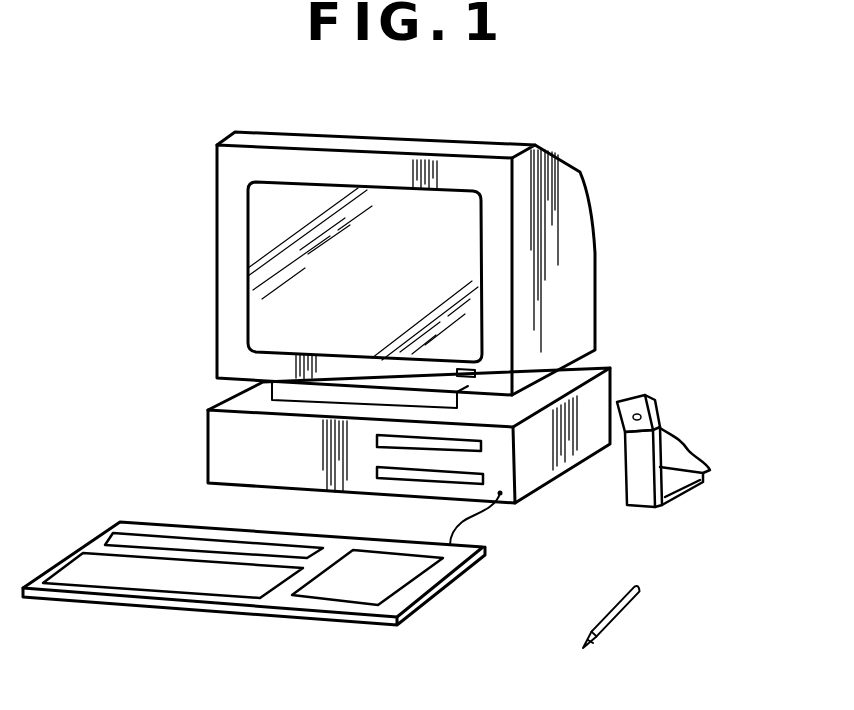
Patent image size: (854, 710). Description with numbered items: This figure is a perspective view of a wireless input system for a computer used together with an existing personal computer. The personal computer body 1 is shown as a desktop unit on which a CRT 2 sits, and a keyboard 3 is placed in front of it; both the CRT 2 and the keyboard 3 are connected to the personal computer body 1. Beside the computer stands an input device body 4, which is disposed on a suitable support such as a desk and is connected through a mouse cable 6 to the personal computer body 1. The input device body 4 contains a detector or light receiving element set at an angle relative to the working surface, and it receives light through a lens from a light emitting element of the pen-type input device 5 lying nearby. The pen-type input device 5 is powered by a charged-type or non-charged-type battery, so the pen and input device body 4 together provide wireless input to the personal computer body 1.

The personal computer body 1 is at (597, 392).
The CRT 2 is at (388, 197).
The keyboard 3 is at (197, 577).
The input device body 4 is at (638, 477).
The pen-type input device 5 is at (603, 623).
The mouse cable 6 is at (700, 455).